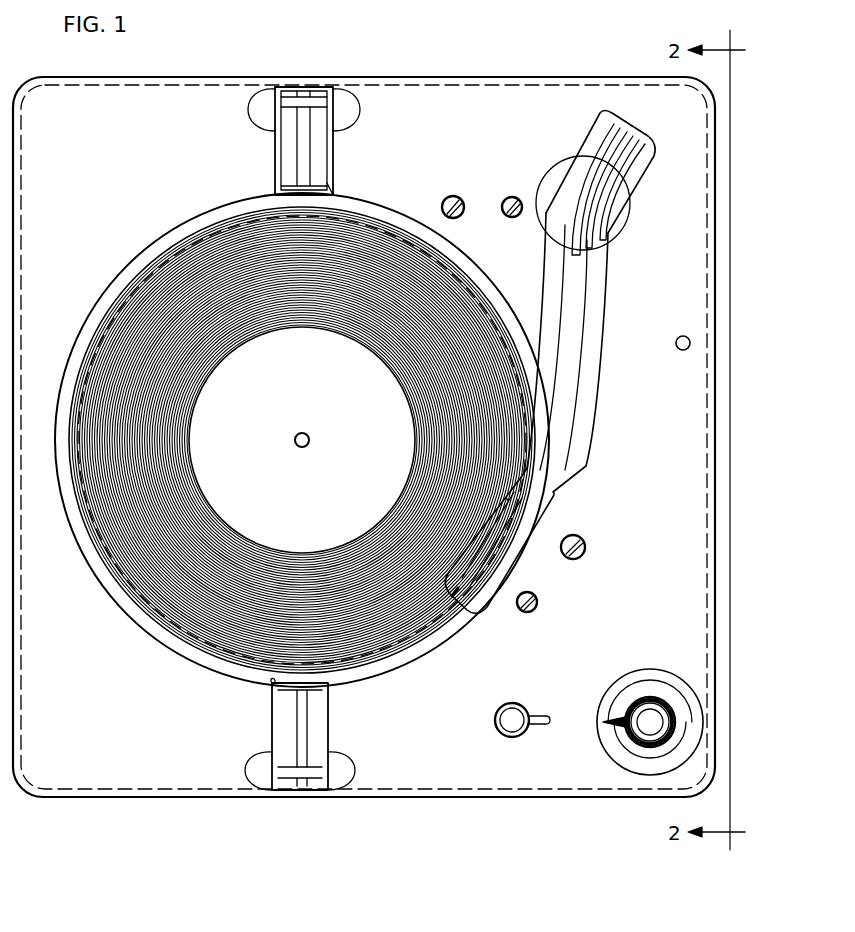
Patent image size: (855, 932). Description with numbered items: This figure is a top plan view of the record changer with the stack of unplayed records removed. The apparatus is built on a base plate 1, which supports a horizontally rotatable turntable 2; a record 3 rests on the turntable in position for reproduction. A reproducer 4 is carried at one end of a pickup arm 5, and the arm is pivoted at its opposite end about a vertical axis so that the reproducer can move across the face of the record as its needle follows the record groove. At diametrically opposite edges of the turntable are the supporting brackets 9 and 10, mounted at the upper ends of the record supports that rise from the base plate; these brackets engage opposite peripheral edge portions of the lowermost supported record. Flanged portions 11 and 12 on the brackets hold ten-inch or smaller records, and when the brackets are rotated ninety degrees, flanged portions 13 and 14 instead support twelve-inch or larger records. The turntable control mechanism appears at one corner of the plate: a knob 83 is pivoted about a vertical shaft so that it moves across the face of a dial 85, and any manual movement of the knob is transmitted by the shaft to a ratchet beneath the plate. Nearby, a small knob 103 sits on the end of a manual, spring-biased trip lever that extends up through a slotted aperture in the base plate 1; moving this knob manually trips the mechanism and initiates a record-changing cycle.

The base plate 1 is at (460, 798).
The turntable 2 is at (181, 652).
The record 3 is at (246, 680).
The reproducer 4 is at (490, 596).
The pickup arm 5 is at (600, 312).
The supporting bracket 9 is at (285, 776).
The supporting bracket 10 is at (292, 100).
The flanged portion 11 is at (269, 686).
The flanged portion 12 is at (332, 191).
The flanged portion 13 is at (329, 715).
The flanged portion 14 is at (280, 155).
The knob 83 is at (611, 729).
The dial 85 is at (613, 688).
The small knob 103 is at (509, 737).